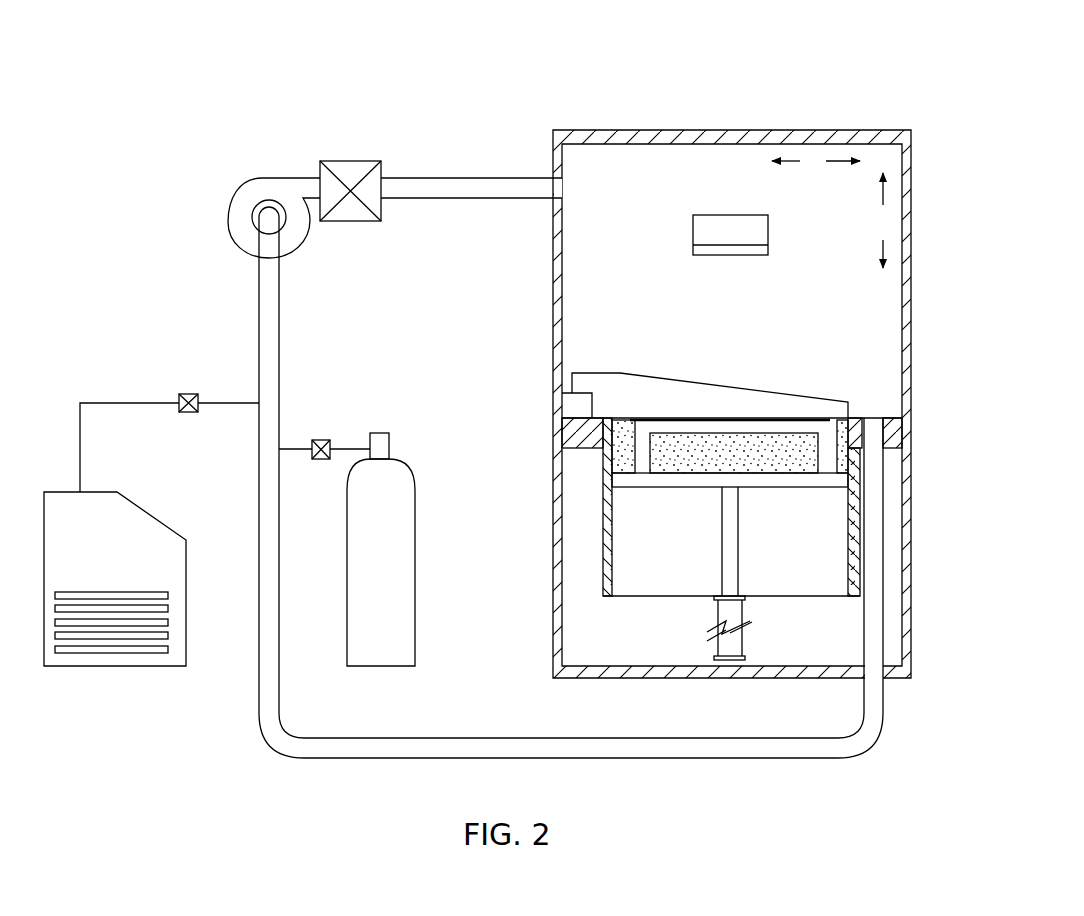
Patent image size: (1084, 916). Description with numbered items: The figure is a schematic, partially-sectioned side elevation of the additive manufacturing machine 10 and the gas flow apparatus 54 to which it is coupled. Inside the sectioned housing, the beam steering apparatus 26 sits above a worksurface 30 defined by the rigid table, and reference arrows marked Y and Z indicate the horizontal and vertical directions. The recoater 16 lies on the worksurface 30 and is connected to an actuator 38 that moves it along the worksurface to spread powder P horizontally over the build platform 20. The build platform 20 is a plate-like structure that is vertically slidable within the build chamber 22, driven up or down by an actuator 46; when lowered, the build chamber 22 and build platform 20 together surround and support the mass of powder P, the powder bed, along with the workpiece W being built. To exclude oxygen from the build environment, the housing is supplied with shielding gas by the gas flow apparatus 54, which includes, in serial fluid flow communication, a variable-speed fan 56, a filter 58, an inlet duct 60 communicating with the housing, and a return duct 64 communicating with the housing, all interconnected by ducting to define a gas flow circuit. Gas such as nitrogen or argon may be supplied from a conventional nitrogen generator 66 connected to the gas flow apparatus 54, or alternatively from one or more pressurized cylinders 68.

The machine 10 is at (723, 70).
The recoater 16 is at (668, 390).
The build platform 20 is at (652, 487).
The build chamber 22 is at (603, 589).
The beam steering apparatus 26 is at (706, 233).
The worksurface 30 is at (893, 416).
The actuator 38 is at (575, 407).
The actuator 46 is at (728, 550).
The gas flow apparatus 54 is at (185, 335).
The variable-speed fan 56 is at (254, 198).
The filter 58 is at (330, 161).
The inlet duct 60 is at (445, 186).
The return duct 64 is at (881, 578).
The nitrogen generator 66 is at (121, 580).
The pressurized cylinder 68 is at (399, 580).
The powder P is at (724, 463).
The workpiece W is at (820, 437).
The Y axis Y is at (816, 162).
The Z axis Z is at (883, 220).